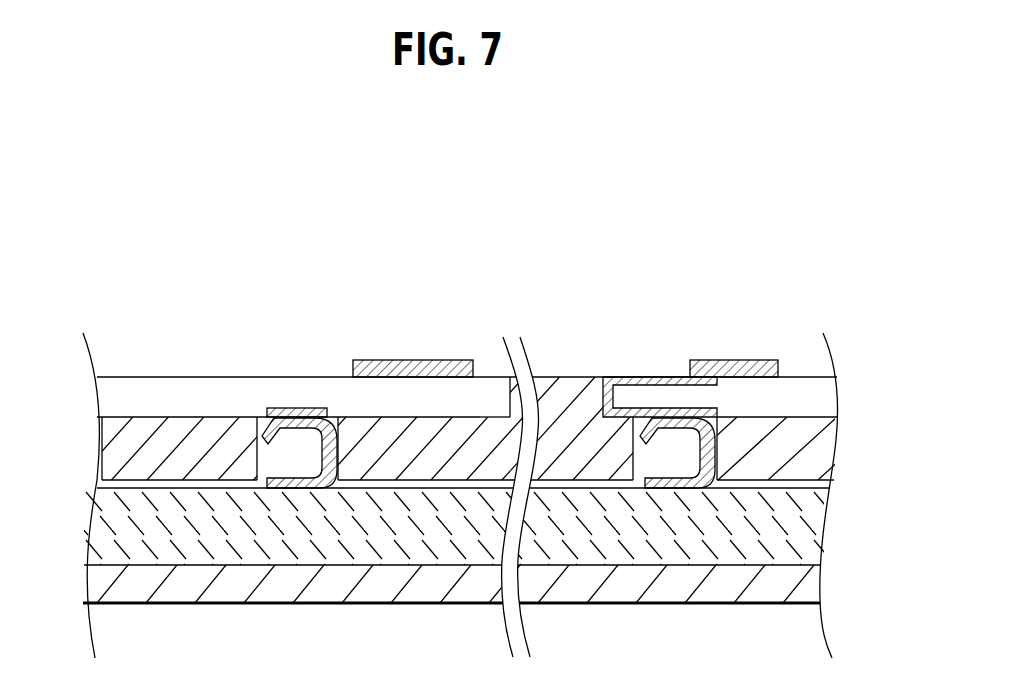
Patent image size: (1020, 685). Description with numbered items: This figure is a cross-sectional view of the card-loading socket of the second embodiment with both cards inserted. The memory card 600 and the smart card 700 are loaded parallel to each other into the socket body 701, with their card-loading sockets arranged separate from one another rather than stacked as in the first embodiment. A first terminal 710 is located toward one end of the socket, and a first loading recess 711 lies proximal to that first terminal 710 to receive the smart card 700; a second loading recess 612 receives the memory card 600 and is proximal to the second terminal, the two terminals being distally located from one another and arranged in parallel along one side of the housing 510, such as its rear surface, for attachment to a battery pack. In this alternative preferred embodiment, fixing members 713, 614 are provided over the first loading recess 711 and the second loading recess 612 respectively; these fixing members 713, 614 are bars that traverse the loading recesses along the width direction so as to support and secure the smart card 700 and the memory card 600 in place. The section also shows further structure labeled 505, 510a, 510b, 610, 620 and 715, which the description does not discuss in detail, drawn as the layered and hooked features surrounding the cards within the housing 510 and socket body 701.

The display panel assembly 505 is at (832, 530).
The housing 510 is at (408, 458).
The first coupling portion of chassis base 510a is at (300, 457).
The second coupling portion of chassis base 510b is at (682, 457).
The memory card 600 is at (820, 395).
The first pad 610 is at (293, 413).
The second loading recess 612 is at (595, 398).
The fixing member 614 is at (730, 370).
The conductive connector 620 is at (627, 380).
The smart card 700 is at (150, 392).
The socket body 701 is at (115, 527).
The first terminal 710 is at (304, 420).
The first loading recess 711 is at (504, 388).
The fixing member 713 is at (416, 362).
The base layer 715 is at (173, 583).